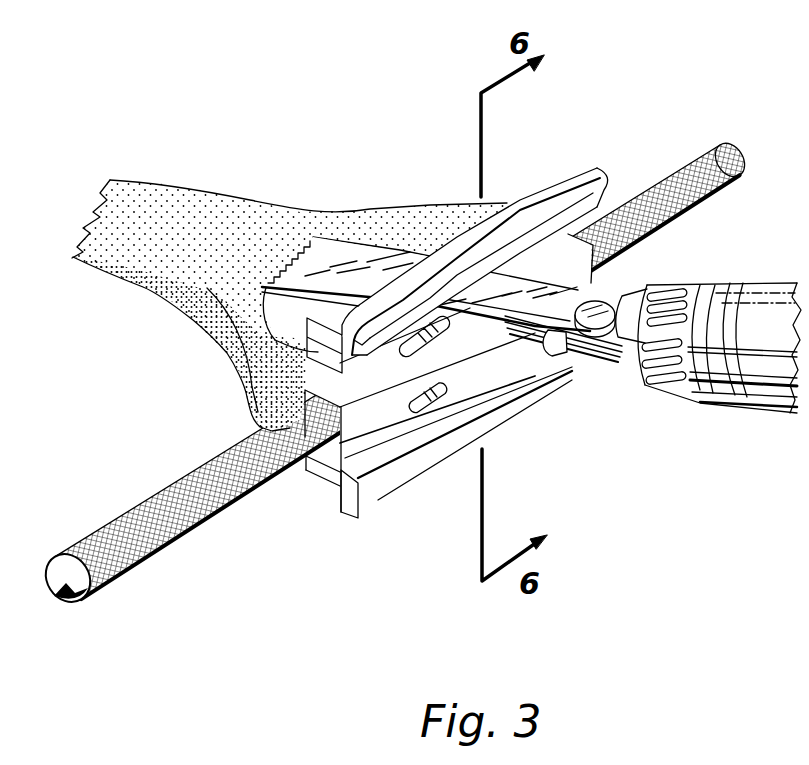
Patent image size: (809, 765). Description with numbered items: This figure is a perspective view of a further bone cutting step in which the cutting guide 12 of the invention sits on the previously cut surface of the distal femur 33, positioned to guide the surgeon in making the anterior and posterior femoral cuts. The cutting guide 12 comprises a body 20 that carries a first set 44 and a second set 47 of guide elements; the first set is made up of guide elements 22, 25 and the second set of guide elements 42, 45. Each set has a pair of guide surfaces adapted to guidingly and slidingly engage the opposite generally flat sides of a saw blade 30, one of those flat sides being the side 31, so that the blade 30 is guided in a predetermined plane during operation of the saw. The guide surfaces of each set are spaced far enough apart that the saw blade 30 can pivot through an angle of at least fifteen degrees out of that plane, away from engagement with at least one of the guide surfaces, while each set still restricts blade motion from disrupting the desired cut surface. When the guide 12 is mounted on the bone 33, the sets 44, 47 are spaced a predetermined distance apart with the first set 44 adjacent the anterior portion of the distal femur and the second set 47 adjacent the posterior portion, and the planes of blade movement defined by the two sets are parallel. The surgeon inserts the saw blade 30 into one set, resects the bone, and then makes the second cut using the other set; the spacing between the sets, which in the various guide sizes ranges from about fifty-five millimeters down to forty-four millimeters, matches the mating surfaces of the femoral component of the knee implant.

The cutting guide 12 is at (444, 492).
The body 20 is at (330, 484).
The guide element 22 is at (375, 500).
The guide element 25 is at (322, 478).
The saw blade 30 is at (554, 308).
The flat side of saw blade 31 is at (507, 266).
The bone 33 is at (318, 178).
The guide element 42 is at (568, 188).
The first set of guide elements 44 is at (315, 340).
The guide element 45 is at (320, 350).
The second set of guide elements 47 is at (318, 470).